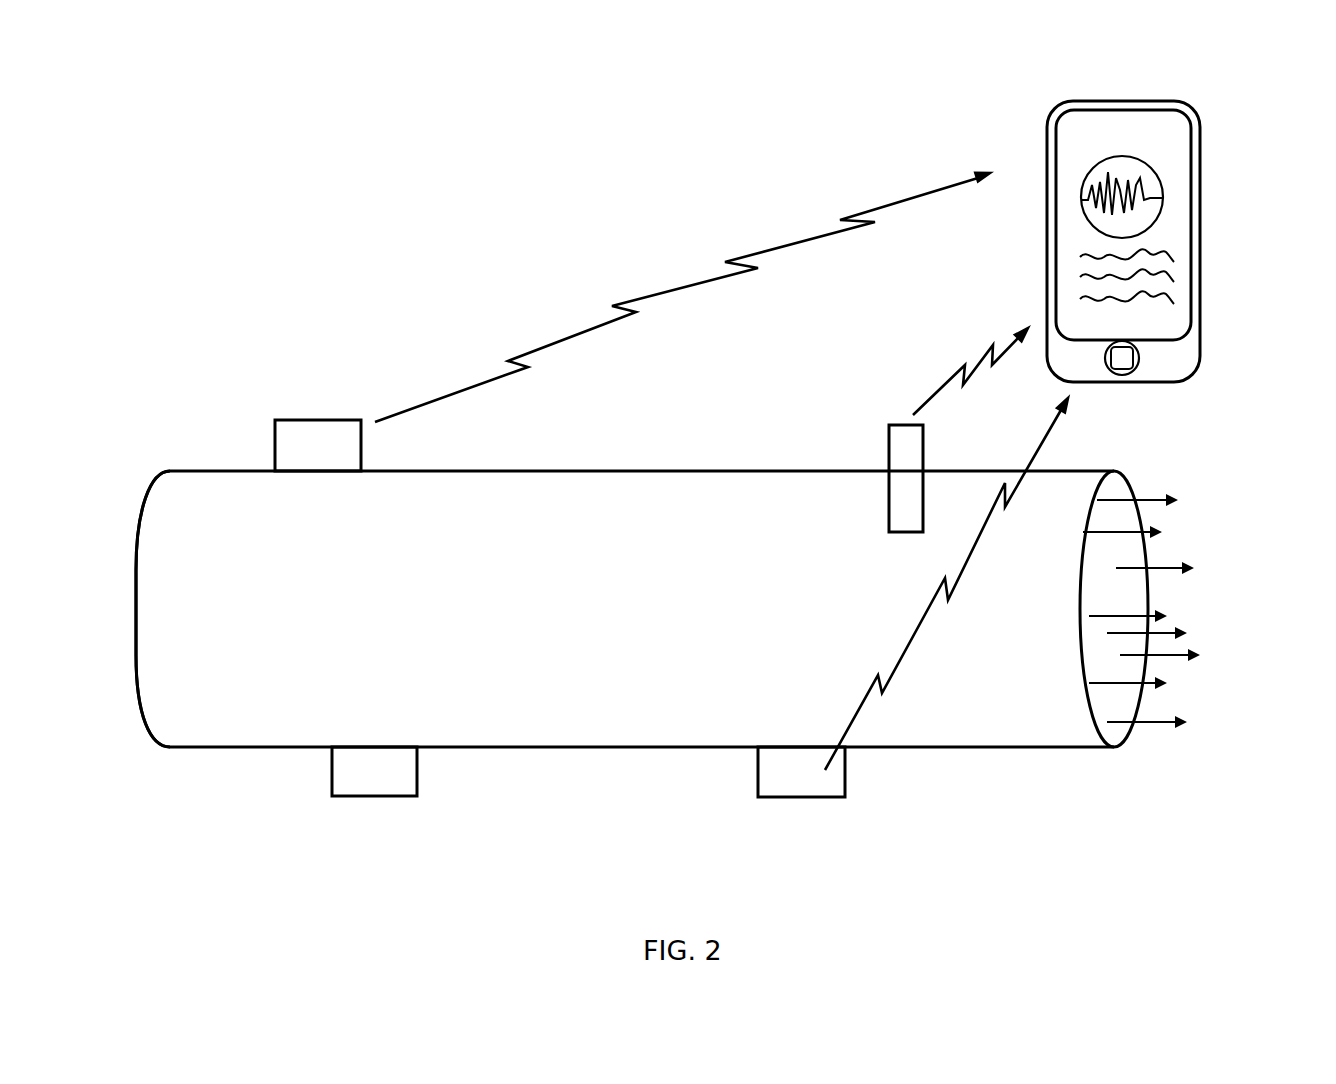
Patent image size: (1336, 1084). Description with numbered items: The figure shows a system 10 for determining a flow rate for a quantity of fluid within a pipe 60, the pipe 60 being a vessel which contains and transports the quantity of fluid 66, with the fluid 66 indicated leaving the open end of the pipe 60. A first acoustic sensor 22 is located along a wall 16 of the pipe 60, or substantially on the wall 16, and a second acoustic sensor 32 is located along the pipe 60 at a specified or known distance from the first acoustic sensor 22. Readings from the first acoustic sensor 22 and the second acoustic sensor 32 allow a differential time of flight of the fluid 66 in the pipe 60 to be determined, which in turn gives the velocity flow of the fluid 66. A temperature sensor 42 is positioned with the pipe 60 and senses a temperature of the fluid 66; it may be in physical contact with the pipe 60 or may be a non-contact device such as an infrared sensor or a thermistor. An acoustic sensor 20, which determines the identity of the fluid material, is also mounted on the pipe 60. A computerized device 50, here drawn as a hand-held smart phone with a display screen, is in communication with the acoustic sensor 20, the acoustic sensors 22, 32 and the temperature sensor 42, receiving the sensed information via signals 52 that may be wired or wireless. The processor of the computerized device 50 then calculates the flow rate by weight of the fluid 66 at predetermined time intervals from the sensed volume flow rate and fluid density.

The system 10 is at (405, 180).
The wall 16 is at (235, 470).
The acoustic sensor 20 is at (378, 772).
The first acoustic sensor 22 is at (318, 427).
The second acoustic sensor 32 is at (800, 775).
The temperature sensor 42 is at (907, 447).
The computerized device 50 is at (1048, 112).
The signals 52 is at (790, 242).
The pipe 60 is at (515, 748).
The fluid 66 is at (1178, 657).